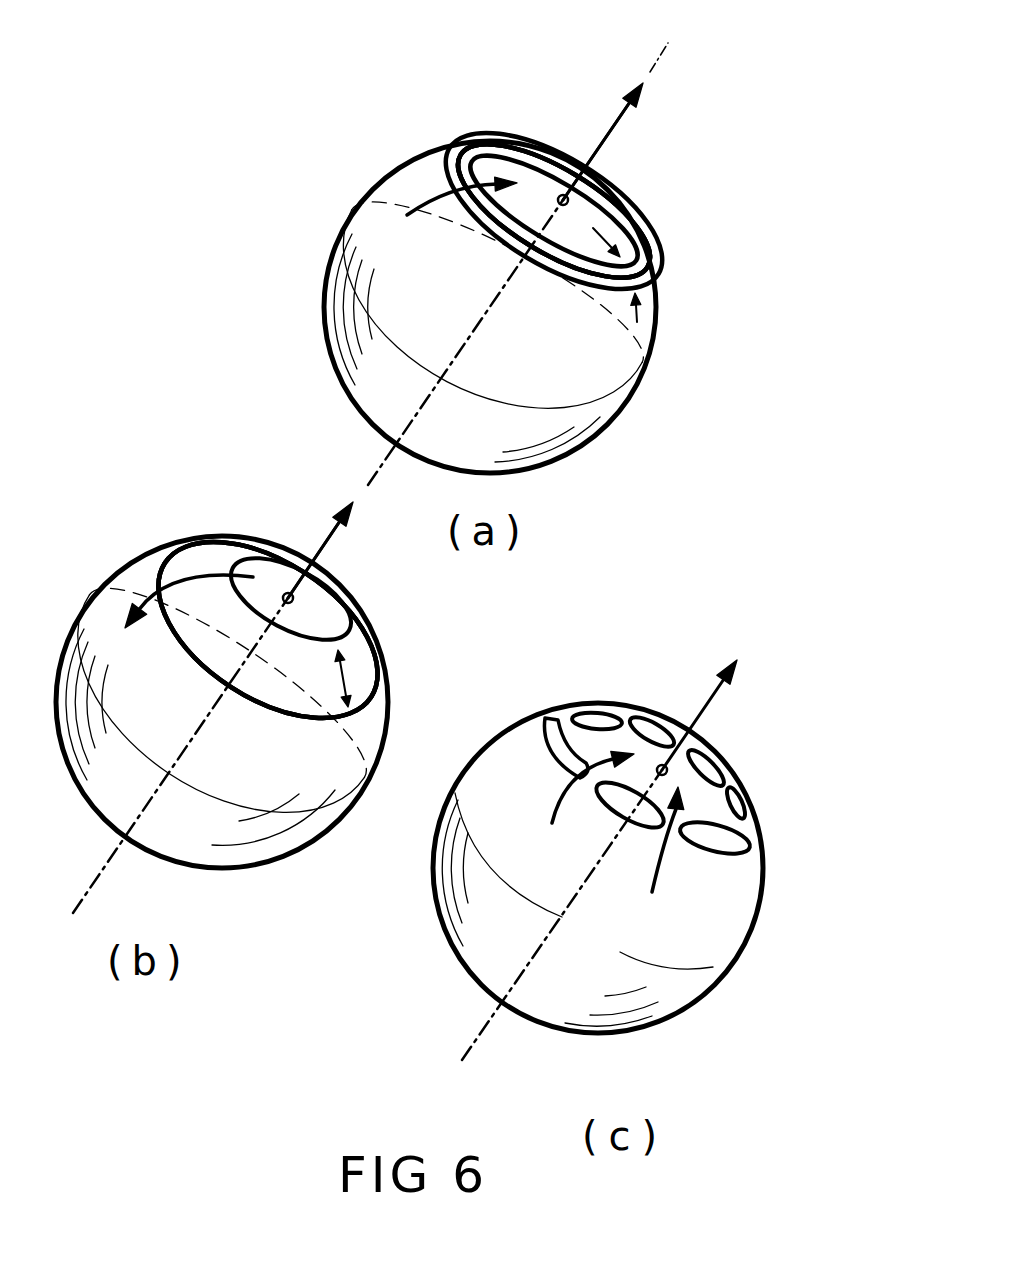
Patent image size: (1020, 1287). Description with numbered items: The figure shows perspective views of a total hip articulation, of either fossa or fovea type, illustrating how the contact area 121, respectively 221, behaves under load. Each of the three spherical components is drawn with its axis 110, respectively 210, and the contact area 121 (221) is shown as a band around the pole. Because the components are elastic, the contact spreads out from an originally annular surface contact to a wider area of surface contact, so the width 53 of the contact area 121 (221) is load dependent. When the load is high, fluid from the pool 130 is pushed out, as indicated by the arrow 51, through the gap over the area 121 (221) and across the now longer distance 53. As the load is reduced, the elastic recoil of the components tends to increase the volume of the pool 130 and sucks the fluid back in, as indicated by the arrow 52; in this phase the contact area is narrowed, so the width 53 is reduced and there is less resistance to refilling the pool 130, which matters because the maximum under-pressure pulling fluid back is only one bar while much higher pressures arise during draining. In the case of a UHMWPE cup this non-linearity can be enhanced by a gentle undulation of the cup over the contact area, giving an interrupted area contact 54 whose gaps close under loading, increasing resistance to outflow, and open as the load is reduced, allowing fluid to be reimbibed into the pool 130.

The arrow 51 is at (192, 580).
The arrow 52 is at (430, 202).
The width of the contact area 53 is at (627, 273).
The interrupted area contact 54 is at (714, 838).
The rotation axis 110 is at (603, 137).
The rotation axis (alternative) 210 is at (402, 331).
The contact area 121 is at (583, 268).
The contact area 221 is at (466, 548).
The pool 130 is at (320, 622).